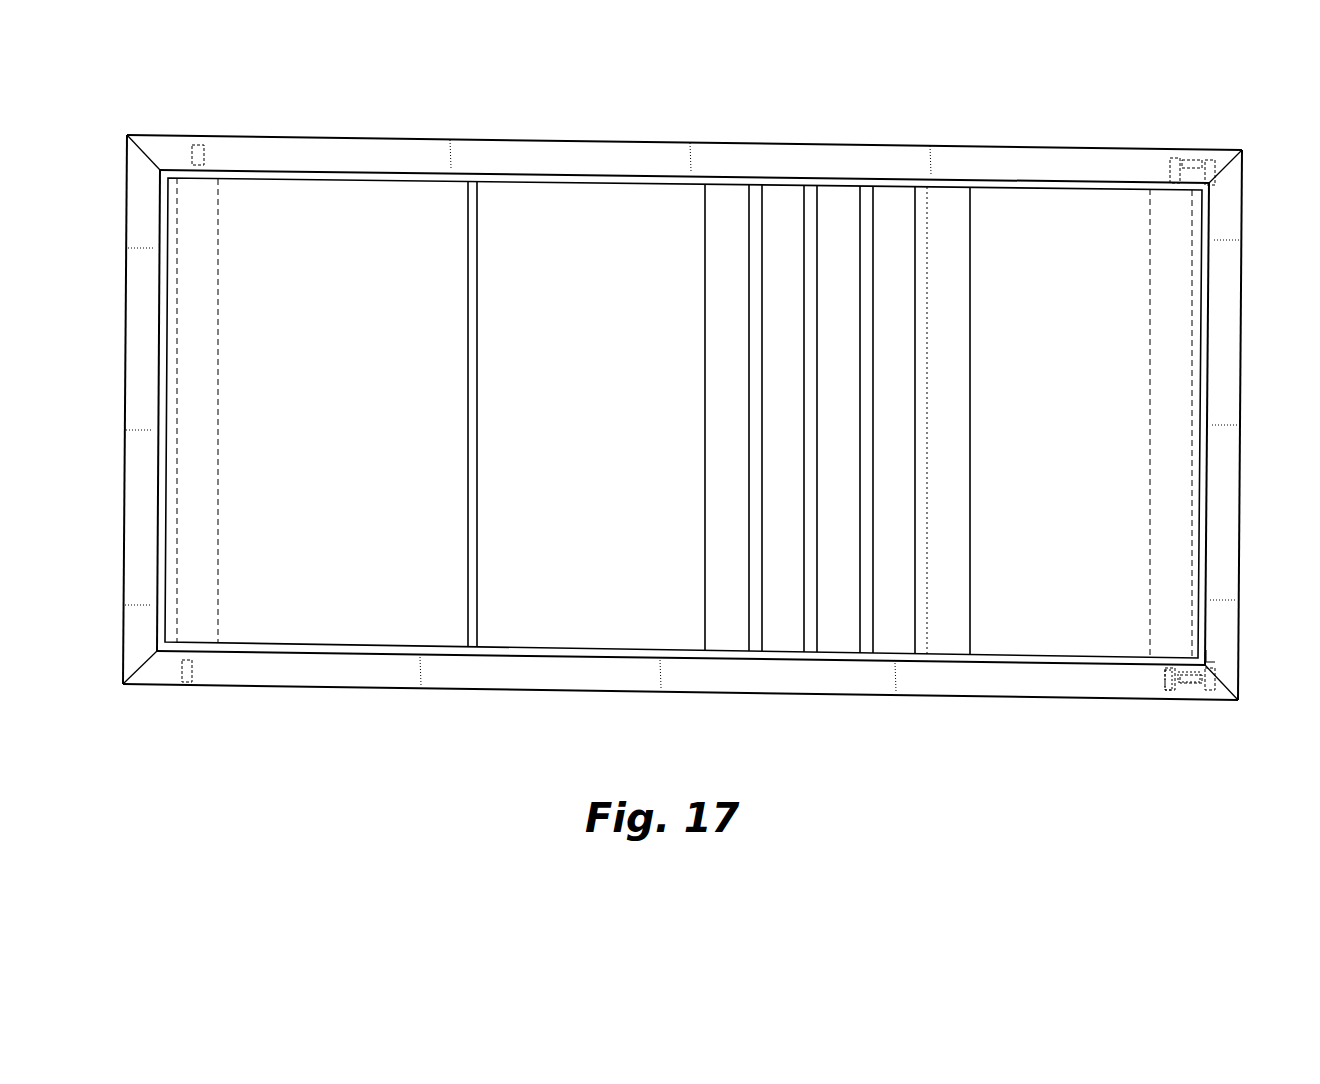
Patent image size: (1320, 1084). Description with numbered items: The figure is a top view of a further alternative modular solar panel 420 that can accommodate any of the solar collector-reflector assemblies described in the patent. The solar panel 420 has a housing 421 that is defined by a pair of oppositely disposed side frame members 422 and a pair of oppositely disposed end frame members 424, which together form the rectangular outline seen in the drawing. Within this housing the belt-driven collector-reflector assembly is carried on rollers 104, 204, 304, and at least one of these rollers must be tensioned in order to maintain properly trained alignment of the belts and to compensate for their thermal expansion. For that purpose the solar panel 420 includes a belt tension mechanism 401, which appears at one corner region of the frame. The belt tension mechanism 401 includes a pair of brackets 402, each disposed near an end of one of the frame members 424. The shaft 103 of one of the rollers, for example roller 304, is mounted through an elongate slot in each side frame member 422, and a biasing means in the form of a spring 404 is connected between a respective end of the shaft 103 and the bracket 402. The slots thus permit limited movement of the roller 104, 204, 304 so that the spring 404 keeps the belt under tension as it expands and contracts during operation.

The solar panel 420 is at (684, 420).
The housing 421 is at (587, 142).
The side frame member 422 is at (787, 162).
The end frame member 424 is at (140, 355).
The belt tension mechanism 401 is at (1250, 580).
The bracket 402 is at (1208, 653).
The spring 404 is at (1188, 690).
The shaft 103 is at (1170, 692).
The roller 104 is at (683, 463).
The roller 204 is at (683, 463).
The roller 304 is at (218, 296).